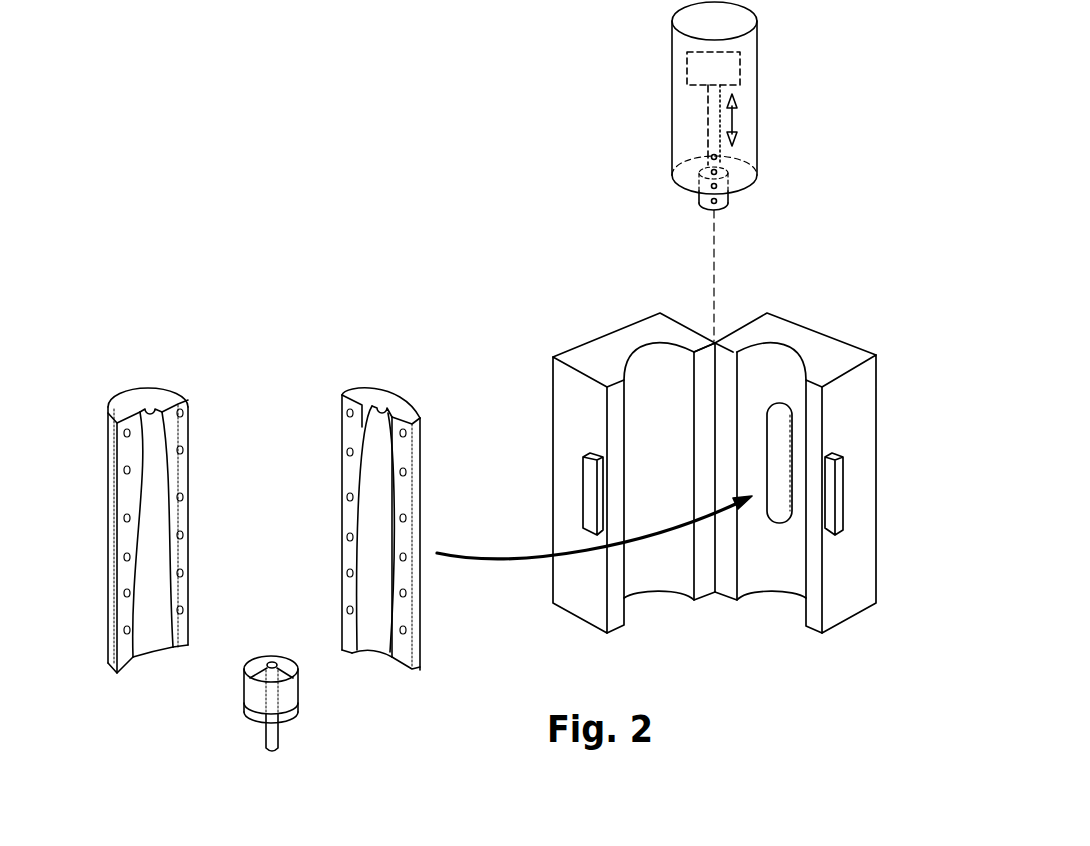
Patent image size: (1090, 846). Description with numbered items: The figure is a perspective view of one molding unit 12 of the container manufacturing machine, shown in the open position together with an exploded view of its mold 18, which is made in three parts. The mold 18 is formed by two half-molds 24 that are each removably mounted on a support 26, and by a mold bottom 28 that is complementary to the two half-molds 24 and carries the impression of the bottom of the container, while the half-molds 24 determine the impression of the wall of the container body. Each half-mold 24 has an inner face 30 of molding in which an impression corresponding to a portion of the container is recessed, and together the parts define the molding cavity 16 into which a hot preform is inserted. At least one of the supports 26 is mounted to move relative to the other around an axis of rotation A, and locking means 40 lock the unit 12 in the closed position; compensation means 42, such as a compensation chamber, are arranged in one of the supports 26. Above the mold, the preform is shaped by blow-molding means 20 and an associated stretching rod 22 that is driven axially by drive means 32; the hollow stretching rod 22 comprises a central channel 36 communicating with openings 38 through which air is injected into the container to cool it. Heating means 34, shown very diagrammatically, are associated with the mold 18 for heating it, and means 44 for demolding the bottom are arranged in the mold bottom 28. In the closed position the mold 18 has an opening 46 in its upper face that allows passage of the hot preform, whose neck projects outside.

The molding unit 12 is at (588, 311).
The molding cavity 16 is at (155, 661).
The mold 18 is at (403, 357).
The blow-molding means 20 is at (757, 125).
The stretching rod 22 is at (712, 166).
The half-mold 24 is at (108, 494).
The support 26 is at (575, 435).
The mold bottom 28 is at (287, 708).
The inner face 30 is at (150, 483).
The drive means 32 is at (740, 68).
The heating means 34 is at (124, 595).
The central channel 36 is at (706, 122).
The openings 38 is at (716, 208).
The locking means 40 is at (582, 499).
The compensation means 42 is at (780, 435).
The means for demolding the bottom 44 is at (264, 702).
The opening 46 is at (148, 407).
The axis of rotation A is at (713, 250).